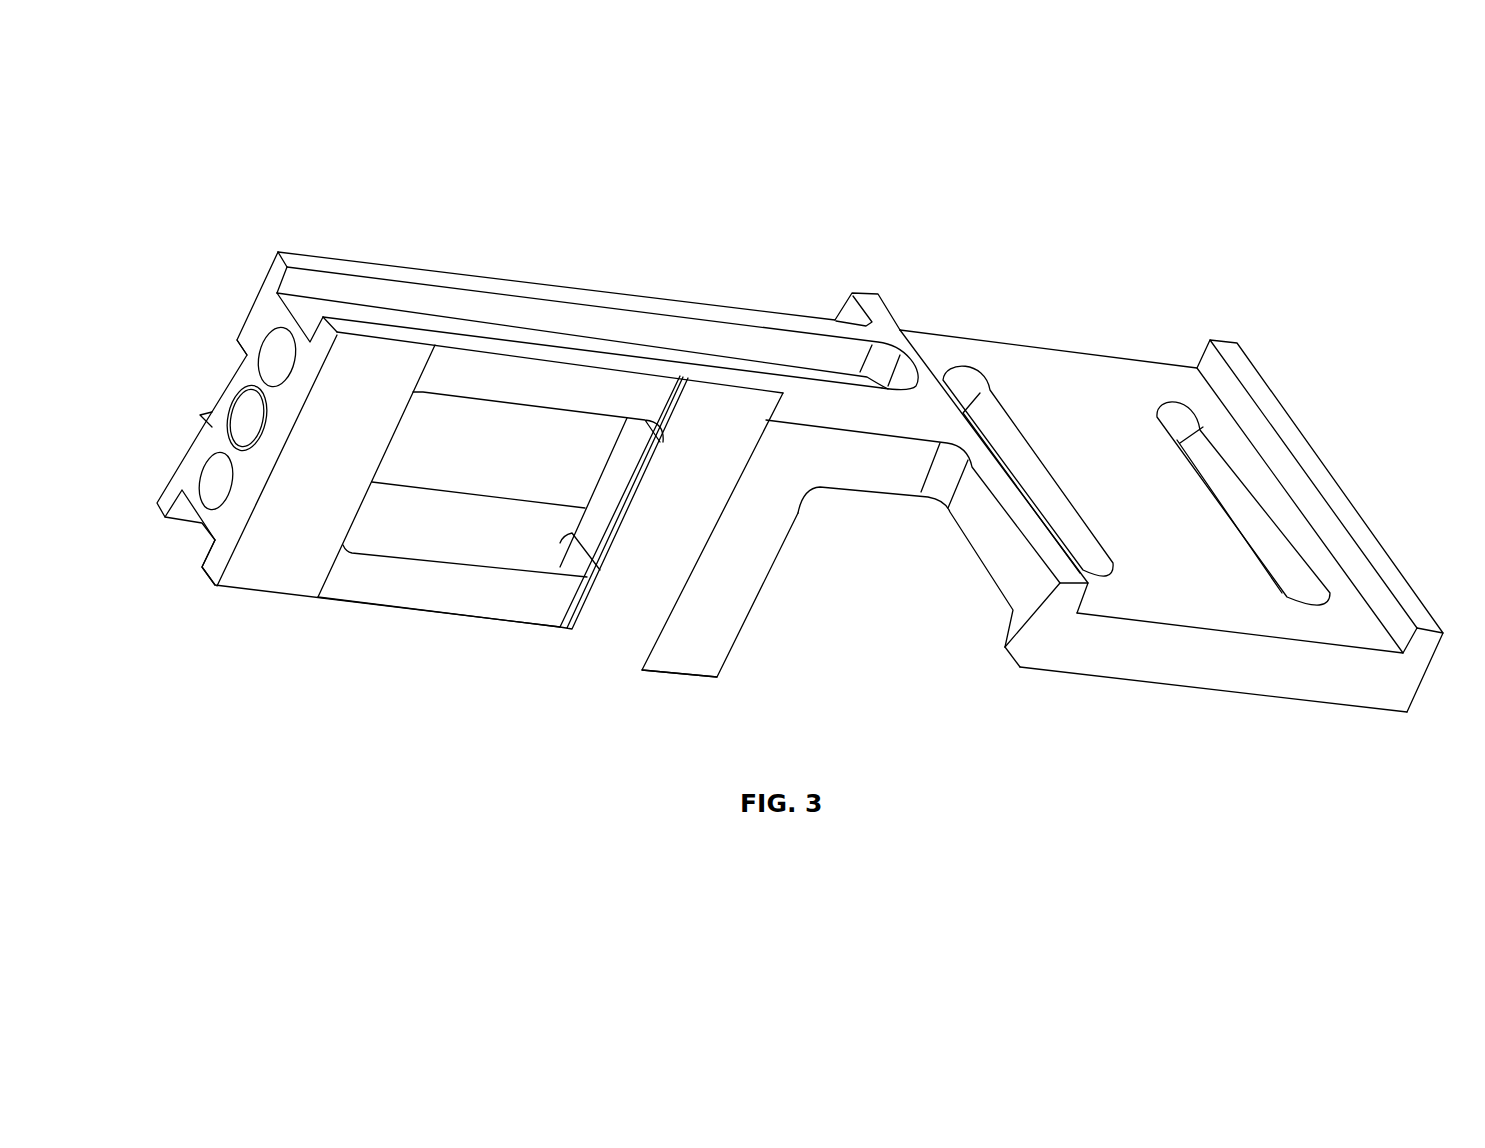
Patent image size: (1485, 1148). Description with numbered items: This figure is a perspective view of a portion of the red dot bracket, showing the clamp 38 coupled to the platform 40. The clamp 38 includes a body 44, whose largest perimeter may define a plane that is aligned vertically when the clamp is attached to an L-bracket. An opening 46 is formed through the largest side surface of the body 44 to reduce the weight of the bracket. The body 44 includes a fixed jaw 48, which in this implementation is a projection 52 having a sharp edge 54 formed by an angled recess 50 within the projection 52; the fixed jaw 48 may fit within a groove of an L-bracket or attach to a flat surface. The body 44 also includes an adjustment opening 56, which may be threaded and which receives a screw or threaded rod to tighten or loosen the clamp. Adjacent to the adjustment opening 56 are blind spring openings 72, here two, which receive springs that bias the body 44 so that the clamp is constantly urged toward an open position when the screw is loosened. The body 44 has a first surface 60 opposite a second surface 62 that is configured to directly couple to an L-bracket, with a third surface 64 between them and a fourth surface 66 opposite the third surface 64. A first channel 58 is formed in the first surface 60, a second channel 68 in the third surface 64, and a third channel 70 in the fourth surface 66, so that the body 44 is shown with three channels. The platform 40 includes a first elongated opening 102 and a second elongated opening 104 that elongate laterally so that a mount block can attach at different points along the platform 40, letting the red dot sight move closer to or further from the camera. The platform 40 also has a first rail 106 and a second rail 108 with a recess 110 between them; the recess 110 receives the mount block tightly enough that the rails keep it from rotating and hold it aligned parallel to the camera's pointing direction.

The clamp 38 is at (510, 282).
The platform 40 is at (1223, 620).
The body 44 is at (420, 587).
The opening 46 is at (480, 458).
The fixed jaw 48 is at (687, 653).
The angled recess 50 is at (755, 408).
The projection 52 is at (730, 602).
The sharp edge 54 is at (657, 632).
The adjustment opening 56 is at (240, 422).
The first channel 58 is at (240, 372).
The first surface 60 is at (190, 437).
The second surface 62 is at (275, 587).
The third surface 64 is at (295, 308).
The fourth surface 66 is at (160, 507).
The second channel 68 is at (308, 318).
The third channel 70 is at (207, 528).
The spring openings 72 is at (275, 348).
The first elongated opening 102 is at (1233, 490).
The second elongated opening 104 is at (1010, 460).
The first rail 106 is at (1423, 620).
The second rail 108 is at (1070, 595).
The recess 110 is at (1163, 617).